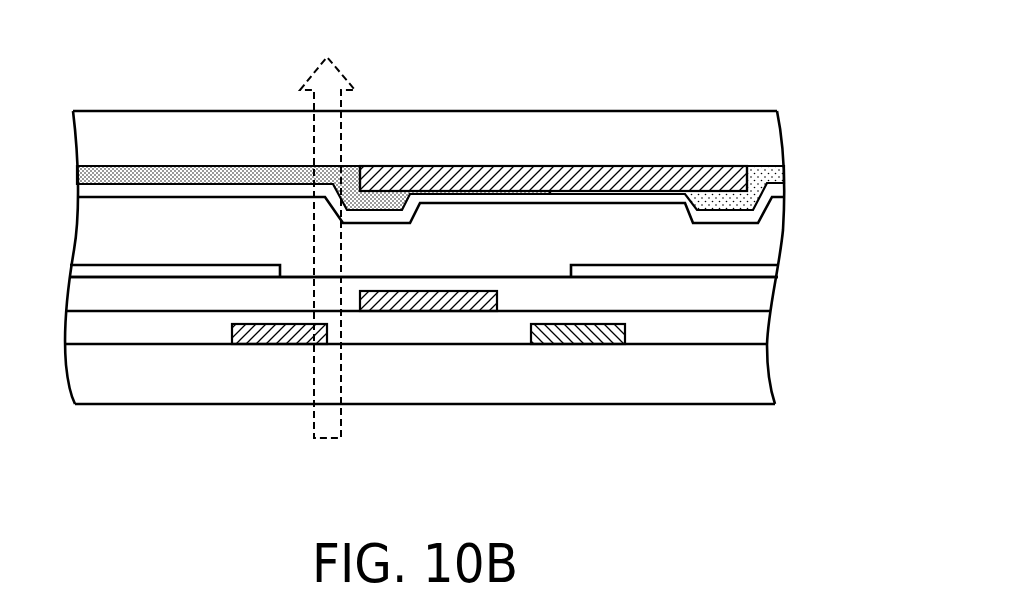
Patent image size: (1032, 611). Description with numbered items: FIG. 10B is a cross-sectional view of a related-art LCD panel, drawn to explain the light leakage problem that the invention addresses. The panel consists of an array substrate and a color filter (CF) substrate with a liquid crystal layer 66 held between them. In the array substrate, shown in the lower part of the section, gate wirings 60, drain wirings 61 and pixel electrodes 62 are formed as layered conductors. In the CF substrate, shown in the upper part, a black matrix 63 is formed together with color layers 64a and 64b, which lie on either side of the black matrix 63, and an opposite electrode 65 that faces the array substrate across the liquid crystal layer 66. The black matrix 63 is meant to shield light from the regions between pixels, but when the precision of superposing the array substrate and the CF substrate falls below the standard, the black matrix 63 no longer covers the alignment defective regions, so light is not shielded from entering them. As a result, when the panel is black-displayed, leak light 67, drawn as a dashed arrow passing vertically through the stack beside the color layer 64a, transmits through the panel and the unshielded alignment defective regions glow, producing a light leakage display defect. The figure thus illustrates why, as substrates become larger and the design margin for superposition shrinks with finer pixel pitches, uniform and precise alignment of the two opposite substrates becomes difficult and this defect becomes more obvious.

The gate wiring 60 is at (583, 337).
The drain wiring 61 is at (435, 305).
The pixel electrode 62 is at (767, 272).
The black matrix 63 is at (541, 172).
The color layer 64a is at (178, 180).
The color layer 64b is at (715, 195).
The opposite electrode 65 is at (605, 198).
The liquid crystal layer 66 is at (760, 237).
The leak light 67 is at (333, 83).